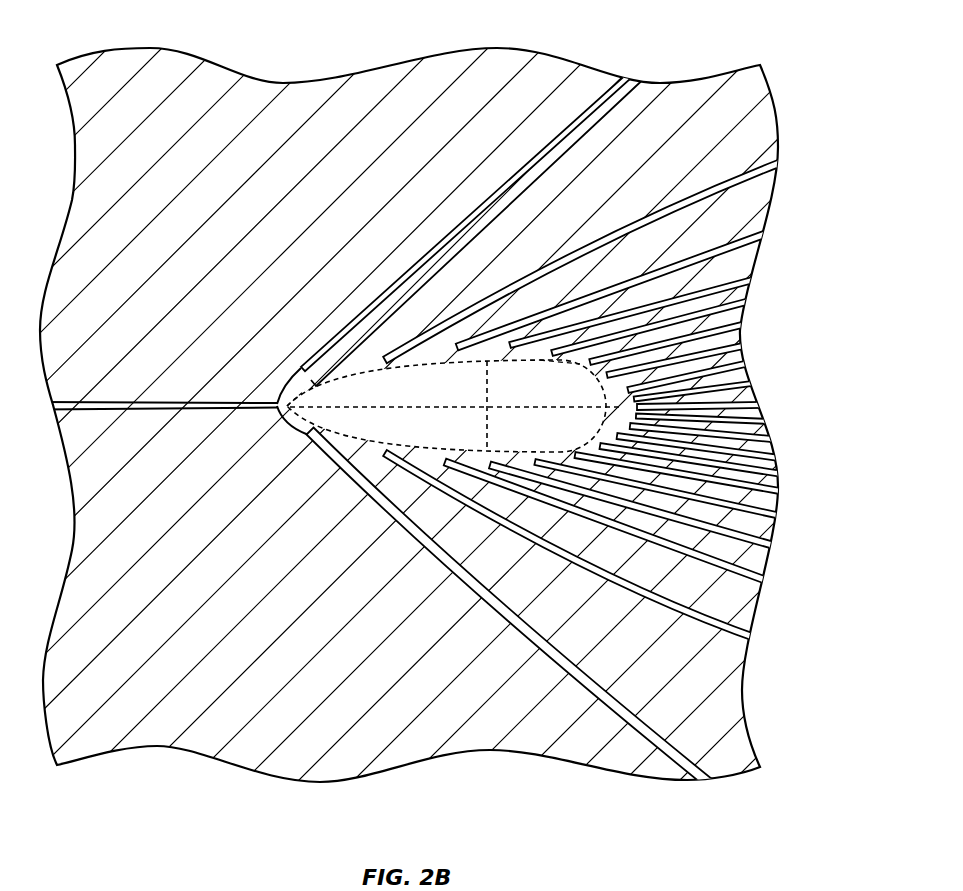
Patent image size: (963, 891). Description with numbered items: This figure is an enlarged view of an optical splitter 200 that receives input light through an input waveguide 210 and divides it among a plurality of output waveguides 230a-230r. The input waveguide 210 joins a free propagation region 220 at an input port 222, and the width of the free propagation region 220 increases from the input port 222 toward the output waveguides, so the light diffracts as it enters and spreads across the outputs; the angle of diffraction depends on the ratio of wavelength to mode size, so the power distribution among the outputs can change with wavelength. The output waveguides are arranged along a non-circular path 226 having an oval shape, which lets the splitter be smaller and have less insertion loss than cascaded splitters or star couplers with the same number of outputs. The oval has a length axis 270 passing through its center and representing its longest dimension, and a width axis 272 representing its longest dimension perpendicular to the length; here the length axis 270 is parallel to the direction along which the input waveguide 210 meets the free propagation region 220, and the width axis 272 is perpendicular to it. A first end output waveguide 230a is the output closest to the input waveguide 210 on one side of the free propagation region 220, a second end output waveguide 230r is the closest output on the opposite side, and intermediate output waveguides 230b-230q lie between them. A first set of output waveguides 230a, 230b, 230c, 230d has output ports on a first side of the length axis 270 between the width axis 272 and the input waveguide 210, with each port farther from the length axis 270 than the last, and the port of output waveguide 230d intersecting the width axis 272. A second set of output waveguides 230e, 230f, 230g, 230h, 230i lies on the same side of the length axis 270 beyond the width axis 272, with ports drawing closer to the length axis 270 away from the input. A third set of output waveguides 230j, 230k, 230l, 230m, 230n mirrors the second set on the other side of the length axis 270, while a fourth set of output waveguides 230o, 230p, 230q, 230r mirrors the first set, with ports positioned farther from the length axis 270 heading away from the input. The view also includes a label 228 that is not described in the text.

The optical splitter 200 is at (182, 66).
The input waveguide 210 is at (80, 407).
The free propagation region 220 is at (452, 382).
The input port 222 is at (277, 403).
The non-circular path 226 is at (318, 382).
The cavity boundary 228 is at (578, 373).
The first end output waveguide 230a is at (642, 85).
The output waveguide 230b is at (779, 160).
The output waveguide 230c is at (768, 235).
The output waveguide 230d is at (754, 278).
The output waveguide 230e is at (748, 305).
The output waveguide 230f is at (748, 328).
The output waveguide 230g is at (748, 350).
The output waveguide 230h is at (753, 371).
The output waveguide 230i is at (759, 399).
The output waveguide 230j is at (768, 422).
The output waveguide 230k is at (771, 441).
The output waveguide 230l is at (774, 460).
The output waveguide 230m is at (779, 488).
The output waveguide 230n is at (779, 516).
The output waveguide 230o is at (774, 547).
The output waveguide 230p is at (768, 583).
The output waveguide 230q is at (748, 637).
The second end output waveguide 230r is at (705, 782).
The length axis 270 is at (543, 407).
The width axis 272 is at (483, 413).